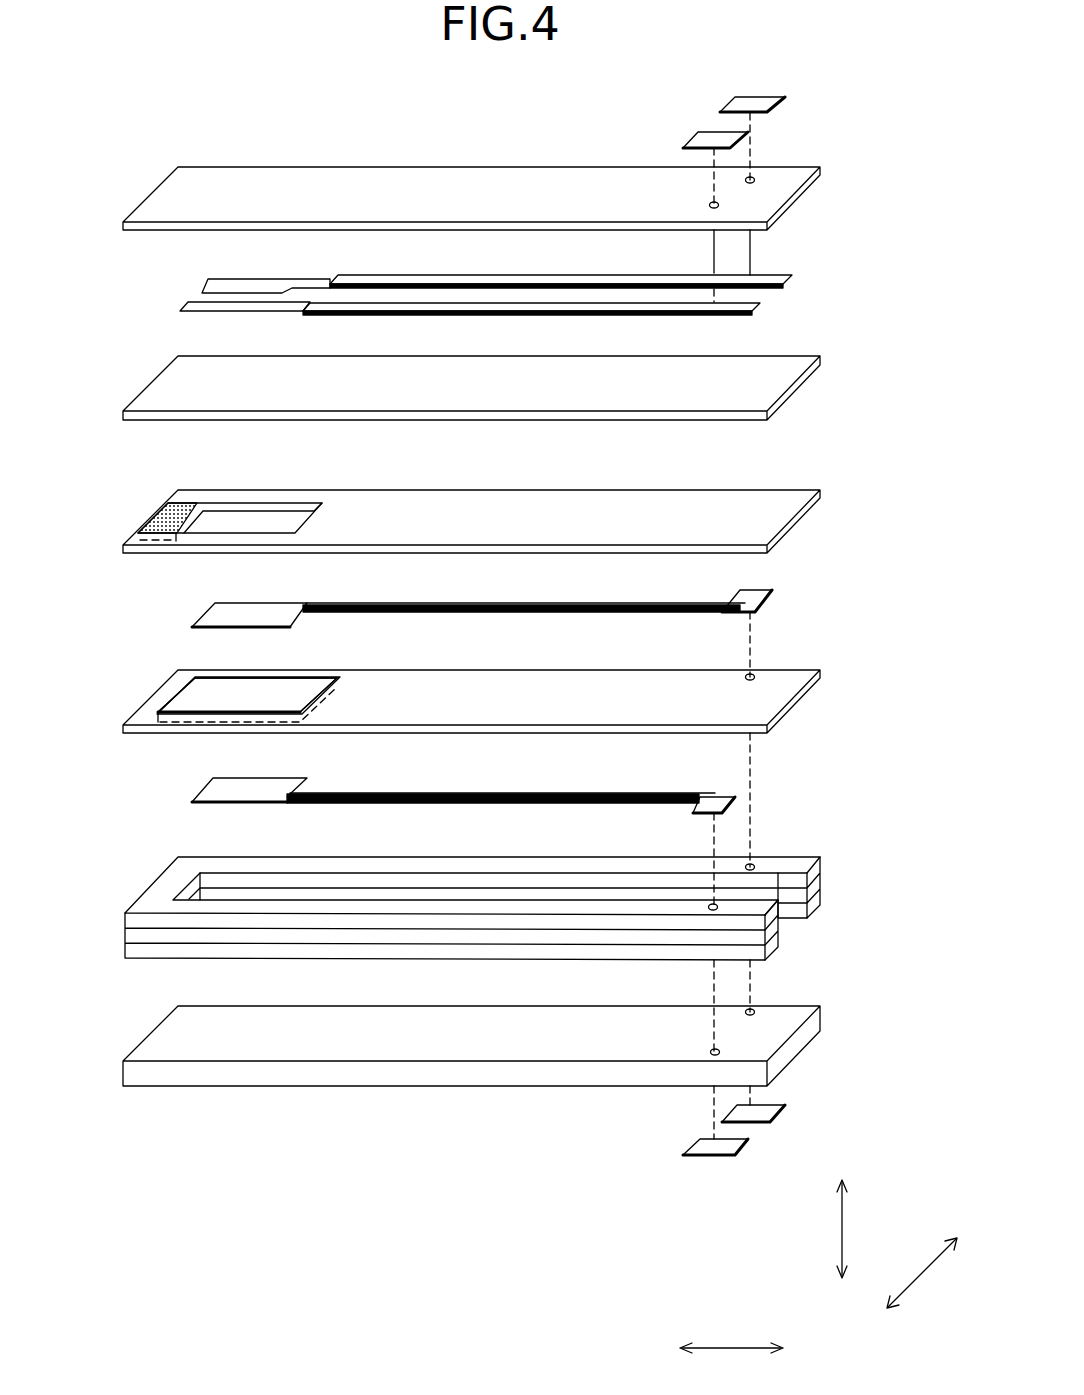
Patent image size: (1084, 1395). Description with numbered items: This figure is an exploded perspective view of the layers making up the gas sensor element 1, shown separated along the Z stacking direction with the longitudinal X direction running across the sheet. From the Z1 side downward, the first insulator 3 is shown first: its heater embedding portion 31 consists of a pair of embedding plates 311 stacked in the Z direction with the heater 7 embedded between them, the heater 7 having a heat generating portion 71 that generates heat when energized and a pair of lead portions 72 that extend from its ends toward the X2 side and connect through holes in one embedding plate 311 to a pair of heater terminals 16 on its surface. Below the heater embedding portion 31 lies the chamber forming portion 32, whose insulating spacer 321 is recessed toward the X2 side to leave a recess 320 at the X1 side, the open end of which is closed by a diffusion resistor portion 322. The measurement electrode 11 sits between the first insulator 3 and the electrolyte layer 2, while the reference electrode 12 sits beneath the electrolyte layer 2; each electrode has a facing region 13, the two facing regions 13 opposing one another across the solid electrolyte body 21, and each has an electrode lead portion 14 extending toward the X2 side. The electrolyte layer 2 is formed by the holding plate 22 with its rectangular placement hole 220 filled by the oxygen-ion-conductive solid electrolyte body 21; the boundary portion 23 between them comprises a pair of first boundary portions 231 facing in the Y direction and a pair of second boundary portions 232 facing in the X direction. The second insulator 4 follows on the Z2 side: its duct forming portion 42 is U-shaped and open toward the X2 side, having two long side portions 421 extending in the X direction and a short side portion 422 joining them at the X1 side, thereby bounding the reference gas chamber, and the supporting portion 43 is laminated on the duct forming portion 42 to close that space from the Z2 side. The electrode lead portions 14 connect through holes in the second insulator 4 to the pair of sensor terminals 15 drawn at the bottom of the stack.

The gas sensor element 1 is at (818, 125).
The heater terminals 16 is at (714, 138).
The first insulator 3 is at (495, 365).
The heater embedding portion 31 is at (532, 309).
The embedding plates 311 is at (802, 205).
The heater 7 is at (496, 305).
The heat generating portion 71 is at (205, 283).
The lead portions 72 is at (765, 311).
The chamber forming portion 32 is at (490, 498).
The recess 320 is at (270, 508).
The insulating spacer 321 is at (377, 512).
The diffusion resistor portion 322 is at (170, 511).
The measurement electrode 11 is at (787, 595).
The reference electrode 12 is at (740, 805).
The facing regions 13 is at (222, 613).
The electrode lead portions 14 is at (678, 604).
The electrolyte layer 2 is at (483, 740).
The solid electrolyte body 21 is at (205, 697).
The holding plate 22 is at (778, 687).
The placement hole 220 is at (178, 670).
The boundary portion 23 is at (248, 701).
The first boundary portions 231 is at (302, 677).
The second boundary portions 232 is at (163, 703).
The second insulator 4 is at (495, 954).
The duct forming portion 42 is at (493, 937).
The long side portions 421 is at (783, 868).
The short side portion 422 is at (172, 885).
The supporting portion 43 is at (835, 1028).
The sensor terminals 15 is at (727, 1153).